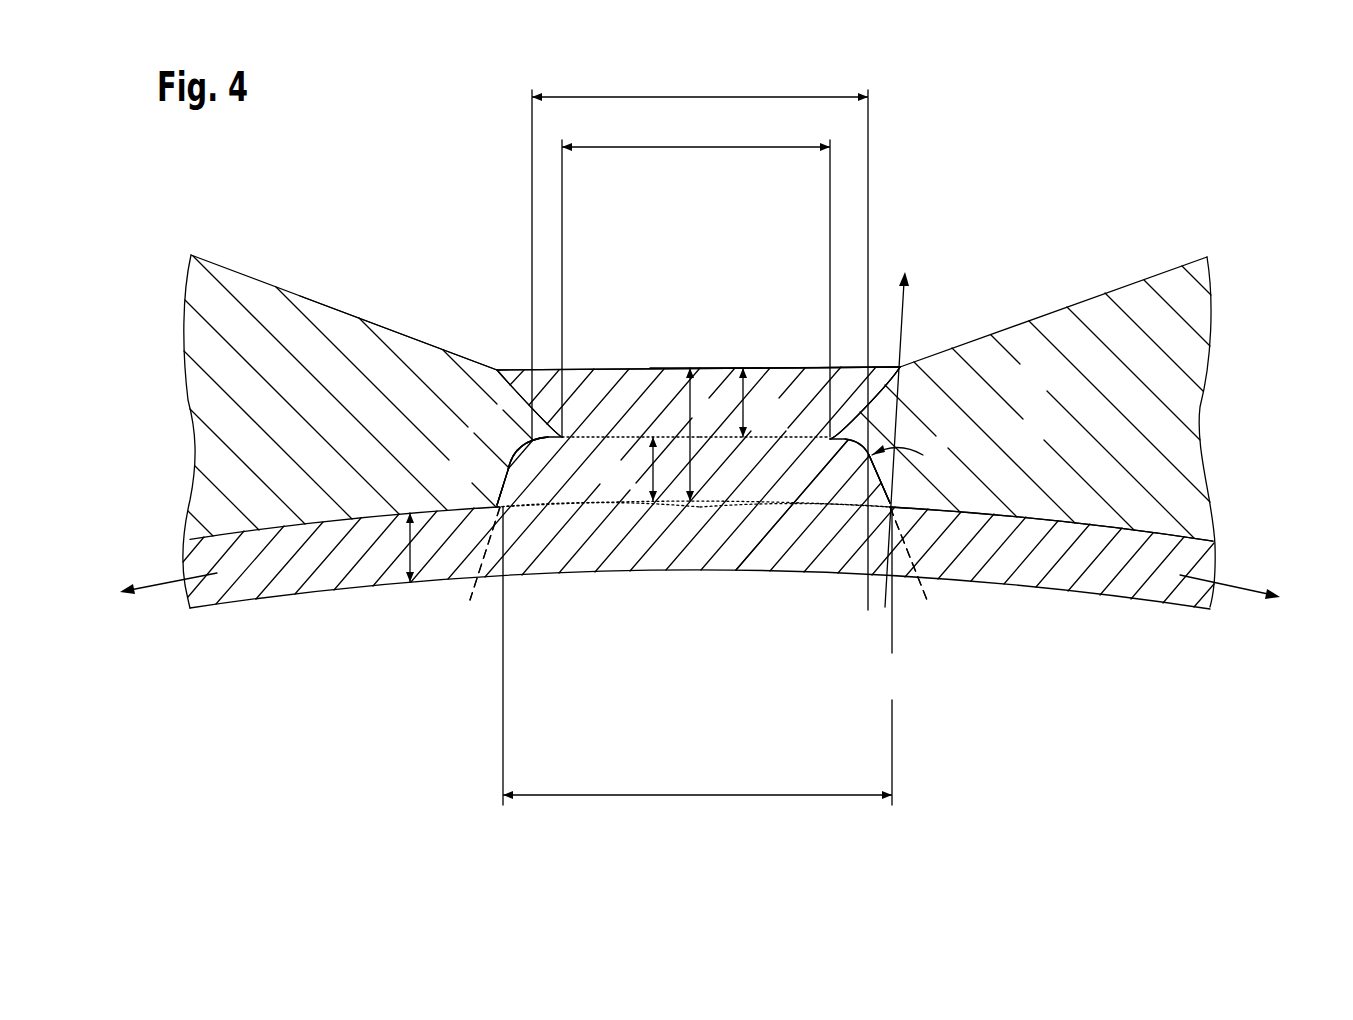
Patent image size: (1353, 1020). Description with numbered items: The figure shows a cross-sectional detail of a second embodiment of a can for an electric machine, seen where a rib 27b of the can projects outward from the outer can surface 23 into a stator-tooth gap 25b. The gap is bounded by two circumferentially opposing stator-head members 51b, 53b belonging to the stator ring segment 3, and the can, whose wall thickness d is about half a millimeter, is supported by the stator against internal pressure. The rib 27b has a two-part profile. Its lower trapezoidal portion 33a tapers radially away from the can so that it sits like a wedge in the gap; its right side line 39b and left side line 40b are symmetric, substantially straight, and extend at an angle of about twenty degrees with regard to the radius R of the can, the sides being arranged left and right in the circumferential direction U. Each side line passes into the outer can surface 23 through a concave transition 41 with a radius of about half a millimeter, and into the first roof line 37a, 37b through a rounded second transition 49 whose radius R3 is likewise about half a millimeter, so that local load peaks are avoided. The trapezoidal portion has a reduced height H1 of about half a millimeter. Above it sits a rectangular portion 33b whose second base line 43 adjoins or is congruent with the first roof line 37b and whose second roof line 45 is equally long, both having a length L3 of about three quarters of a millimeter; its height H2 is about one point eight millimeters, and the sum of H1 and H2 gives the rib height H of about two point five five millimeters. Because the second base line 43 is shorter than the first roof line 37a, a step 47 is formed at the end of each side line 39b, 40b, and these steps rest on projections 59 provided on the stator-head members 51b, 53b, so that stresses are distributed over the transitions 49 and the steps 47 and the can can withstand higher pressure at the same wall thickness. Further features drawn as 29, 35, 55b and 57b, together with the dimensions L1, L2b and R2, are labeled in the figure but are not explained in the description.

The stator ring segment 3 is at (304, 562).
The wall thickness d is at (404, 548).
The outer can surface 23 is at (1070, 525).
The stator-tooth gap 25b is at (604, 356).
The rib 27b is at (803, 372).
The tooth 29 is at (666, 472).
The trapezoidal portion 33a is at (739, 478).
The rectangular portion 33b is at (833, 398).
The tooth body 35 is at (608, 447).
The first roof line 37a is at (745, 437).
The first roof line 37b is at (662, 440).
The right side line 39b is at (900, 504).
The left side line 40b is at (431, 352).
The transition 41 is at (502, 508).
The second base line 43 is at (781, 506).
The second roof line 45 is at (706, 366).
The step 47 is at (478, 395).
The second transition 49 is at (565, 512).
The stator-head member 51b is at (1153, 424).
The stator-head member 53b is at (240, 423).
The left foot region 55b is at (549, 543).
The right flank 57b is at (838, 506).
The projection 59 is at (543, 360).
The height of the rib H is at (698, 434).
The height of the trapezoidal portion H1 is at (629, 469).
The height of the rectangular portion H2 is at (761, 402).
The base width L1 is at (697, 656).
The head width L2b is at (700, 335).
The length L3 is at (696, 276).
The radius of the can R is at (907, 328).
The foot fillet radius R2 is at (488, 493).
The radius R3 is at (520, 432).
The circumferential direction U is at (695, 612).